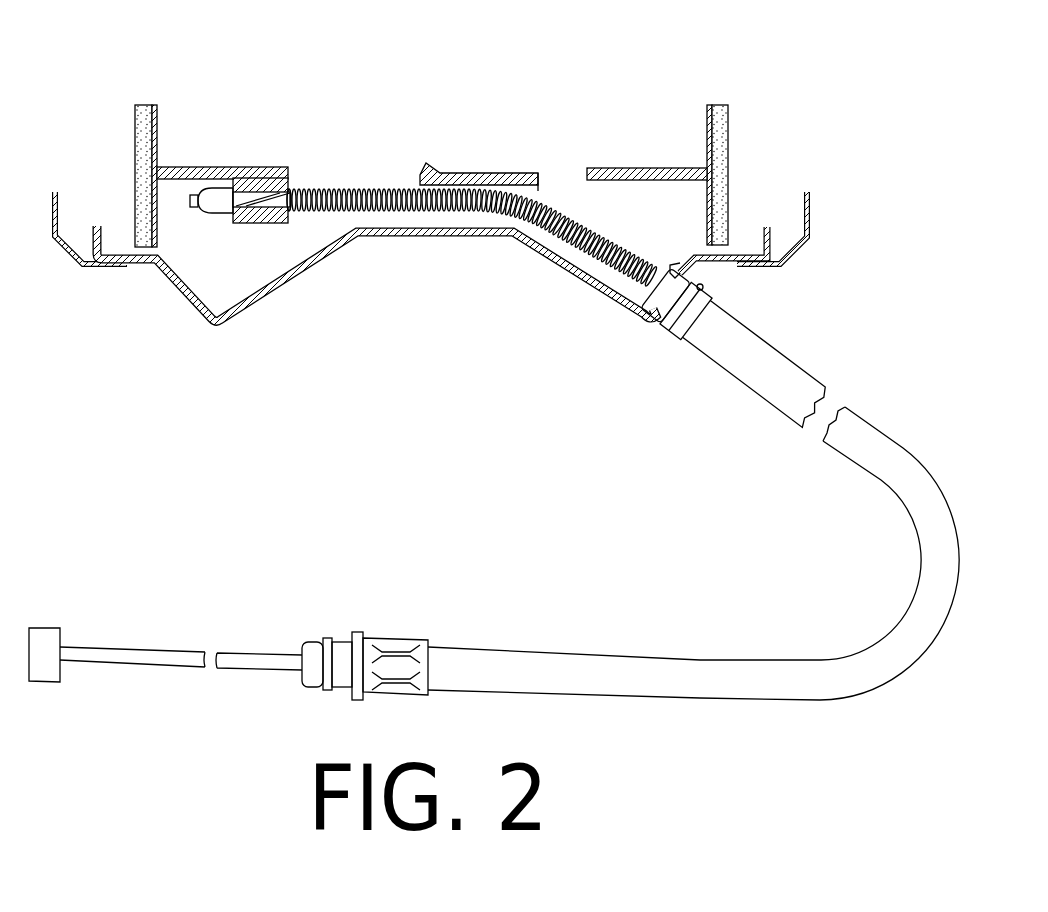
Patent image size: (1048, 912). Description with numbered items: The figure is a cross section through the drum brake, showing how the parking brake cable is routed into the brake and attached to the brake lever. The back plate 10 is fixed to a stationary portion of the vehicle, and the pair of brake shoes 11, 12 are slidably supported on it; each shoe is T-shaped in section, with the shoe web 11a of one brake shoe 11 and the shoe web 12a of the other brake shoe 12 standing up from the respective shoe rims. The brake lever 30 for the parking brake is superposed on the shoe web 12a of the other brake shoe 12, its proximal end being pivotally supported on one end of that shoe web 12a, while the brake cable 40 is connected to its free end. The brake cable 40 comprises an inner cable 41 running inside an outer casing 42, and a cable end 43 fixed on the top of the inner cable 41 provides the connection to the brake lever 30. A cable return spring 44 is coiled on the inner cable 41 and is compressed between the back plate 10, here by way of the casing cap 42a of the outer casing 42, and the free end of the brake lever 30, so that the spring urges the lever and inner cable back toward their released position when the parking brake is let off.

The back plate 10 is at (212, 332).
The brake shoe 11 is at (721, 102).
The shoe web 11a is at (638, 168).
The brake shoe 12 is at (142, 102).
The shoe web 12a is at (230, 167).
The brake lever 30 is at (258, 224).
The brake cable 40 is at (945, 481).
The inner cable 41 is at (265, 180).
The outer casing 42 is at (783, 350).
The casing cap 42a is at (673, 307).
The cable end 43 is at (218, 214).
The cable return spring 44 is at (352, 188).